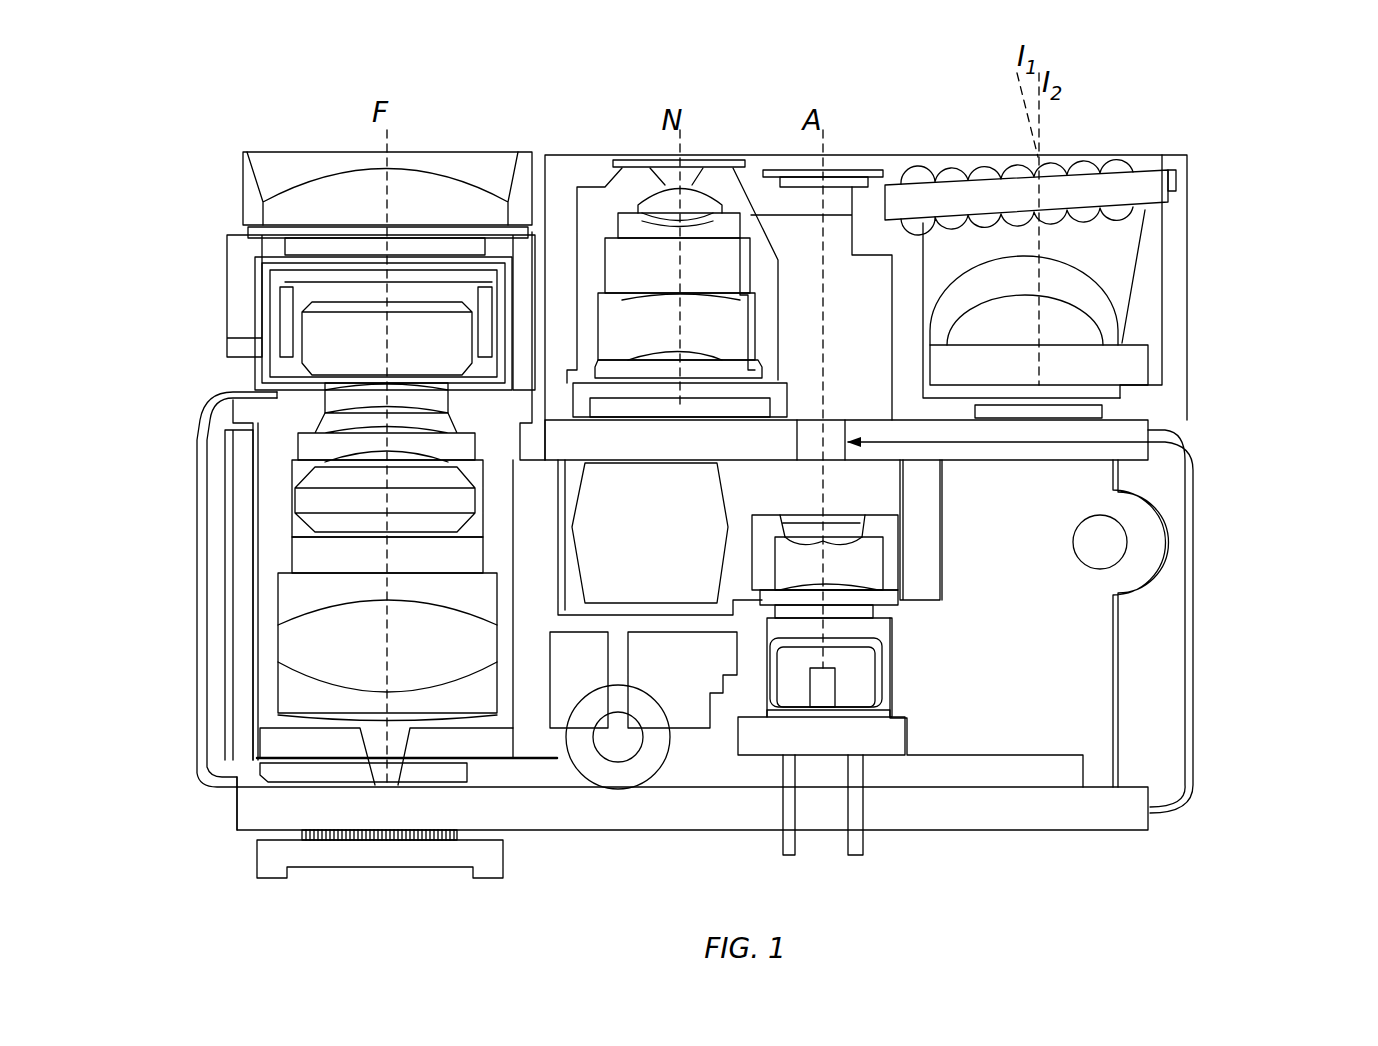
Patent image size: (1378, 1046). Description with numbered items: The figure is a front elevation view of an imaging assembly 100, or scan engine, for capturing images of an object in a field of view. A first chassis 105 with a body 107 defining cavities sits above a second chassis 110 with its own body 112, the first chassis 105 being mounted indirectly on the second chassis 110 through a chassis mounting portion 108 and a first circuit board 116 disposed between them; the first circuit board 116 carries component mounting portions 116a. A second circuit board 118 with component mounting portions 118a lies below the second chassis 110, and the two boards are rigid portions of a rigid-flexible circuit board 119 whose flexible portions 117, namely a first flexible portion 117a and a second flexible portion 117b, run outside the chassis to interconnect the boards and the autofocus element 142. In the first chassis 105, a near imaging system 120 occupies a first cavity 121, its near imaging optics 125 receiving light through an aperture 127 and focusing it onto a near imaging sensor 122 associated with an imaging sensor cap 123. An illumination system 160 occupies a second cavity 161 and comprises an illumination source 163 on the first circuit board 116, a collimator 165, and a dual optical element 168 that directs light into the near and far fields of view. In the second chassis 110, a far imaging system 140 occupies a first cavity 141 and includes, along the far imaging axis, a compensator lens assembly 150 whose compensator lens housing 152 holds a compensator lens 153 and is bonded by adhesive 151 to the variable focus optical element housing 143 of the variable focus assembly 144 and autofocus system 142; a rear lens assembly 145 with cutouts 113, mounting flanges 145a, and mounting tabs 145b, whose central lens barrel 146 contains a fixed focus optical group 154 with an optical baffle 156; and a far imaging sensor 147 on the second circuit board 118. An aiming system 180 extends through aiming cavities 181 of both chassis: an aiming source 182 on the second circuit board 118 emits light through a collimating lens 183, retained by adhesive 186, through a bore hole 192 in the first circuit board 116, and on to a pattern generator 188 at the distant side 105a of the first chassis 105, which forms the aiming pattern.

The assembly 100 is at (1290, 108).
The first chassis 105 is at (547, 155).
The distant side of the first chassis 105a is at (1180, 150).
The body of the first chassis 107 is at (1188, 190).
The chassis mounting portion 108 is at (1197, 397).
The second chassis 110 is at (200, 437).
The body of the second chassis 112 is at (940, 790).
The cutouts 113 is at (255, 455).
The first circuit board 116 is at (1148, 430).
The component mounting portion 116a is at (658, 410).
The flexible portions 117 is at (200, 800).
The first flexible portion 117a is at (1187, 460).
The second flexible portion 117b is at (243, 393).
The second circuit board 118 is at (1125, 832).
The component mounting portion 118a is at (513, 790).
The rigid-flexible circuit board 119 is at (235, 828).
The near imaging system 120 is at (695, 140).
The first cavity 121 is at (740, 170).
The near imaging sensor 122 is at (758, 407).
The imaging sensor cap 123 is at (590, 410).
The near imaging optics 125 is at (834, 295).
The aperture 127 is at (622, 165).
The far imaging system 140 is at (282, 127).
The first cavity 141 is at (266, 641).
The autofocus system 142 is at (258, 308).
The variable focus optical element housing 143 is at (227, 263).
The variable focus assembly 144 is at (170, 325).
The rear lens assembly 145 is at (293, 463).
The mounting flanges 145a is at (260, 613).
The mounting tabs 145b is at (360, 743).
The central lens barrel 146 is at (260, 587).
The far imaging sensor 147 is at (513, 770).
The compensator lens assembly 150 is at (245, 150).
The adhesive 151 is at (245, 230).
The compensator lens housing 152 is at (243, 177).
The compensator lens 153 is at (433, 170).
The fixed focus optical group 154 is at (178, 537).
The optical baffle 156 is at (287, 504).
The illumination system 160 is at (1093, 97).
The second cavity 161 is at (1095, 242).
The illumination source 163 is at (1103, 412).
The collimator 165 is at (1040, 257).
The dual optical element 168 is at (1097, 150).
The aiming system 180 is at (890, 152).
The aiming cavity 181 is at (753, 208).
The aiming source 182 is at (735, 737).
The collimating lens 183 is at (890, 567).
The adhesive 186 is at (890, 600).
The pattern generator 188 is at (783, 170).
The bore hole 192 is at (1100, 520).